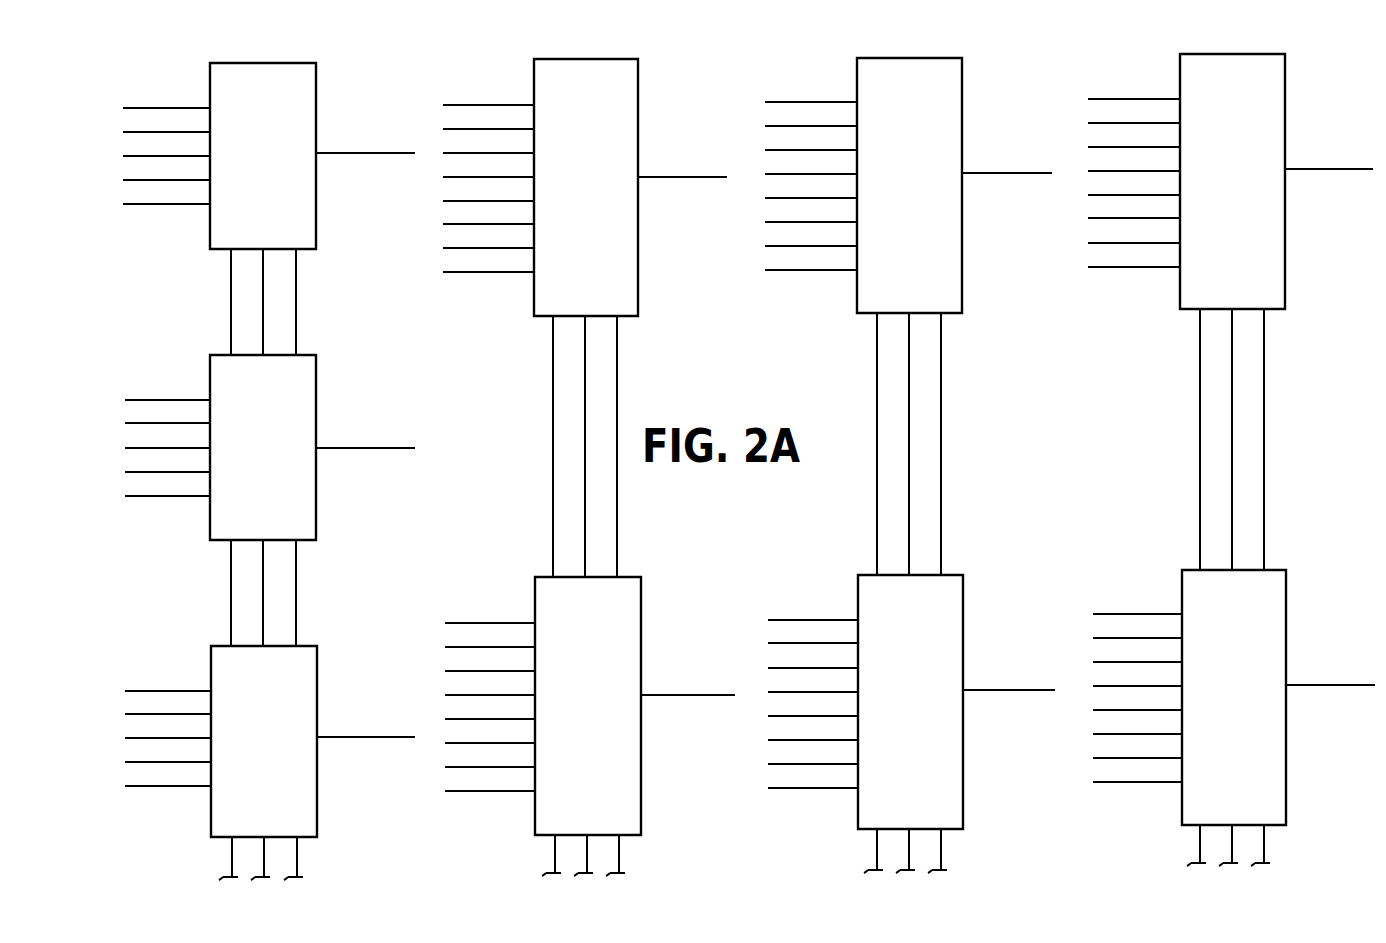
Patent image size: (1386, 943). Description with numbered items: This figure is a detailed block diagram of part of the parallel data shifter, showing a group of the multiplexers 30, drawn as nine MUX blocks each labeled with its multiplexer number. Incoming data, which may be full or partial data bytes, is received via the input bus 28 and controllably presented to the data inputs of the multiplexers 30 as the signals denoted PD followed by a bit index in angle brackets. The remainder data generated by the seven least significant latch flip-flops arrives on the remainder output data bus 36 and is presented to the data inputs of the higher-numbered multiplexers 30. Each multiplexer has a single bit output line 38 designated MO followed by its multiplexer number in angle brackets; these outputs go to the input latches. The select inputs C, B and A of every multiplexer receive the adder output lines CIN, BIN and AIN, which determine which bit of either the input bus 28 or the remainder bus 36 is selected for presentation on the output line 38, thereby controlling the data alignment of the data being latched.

The input bus 28 is at (160, 206).
The multiplexers 30 is at (208, 232).
The remainder output data bus 36 is at (118, 182).
The single bit output line 38 is at (385, 155).